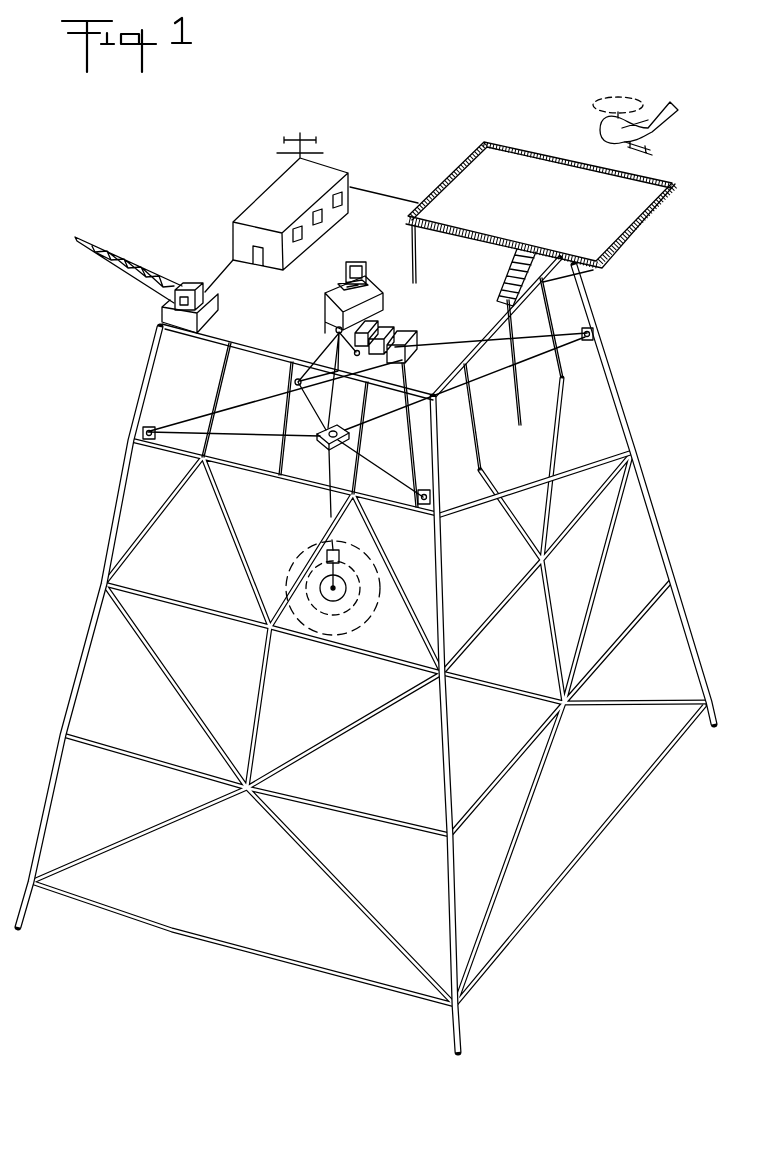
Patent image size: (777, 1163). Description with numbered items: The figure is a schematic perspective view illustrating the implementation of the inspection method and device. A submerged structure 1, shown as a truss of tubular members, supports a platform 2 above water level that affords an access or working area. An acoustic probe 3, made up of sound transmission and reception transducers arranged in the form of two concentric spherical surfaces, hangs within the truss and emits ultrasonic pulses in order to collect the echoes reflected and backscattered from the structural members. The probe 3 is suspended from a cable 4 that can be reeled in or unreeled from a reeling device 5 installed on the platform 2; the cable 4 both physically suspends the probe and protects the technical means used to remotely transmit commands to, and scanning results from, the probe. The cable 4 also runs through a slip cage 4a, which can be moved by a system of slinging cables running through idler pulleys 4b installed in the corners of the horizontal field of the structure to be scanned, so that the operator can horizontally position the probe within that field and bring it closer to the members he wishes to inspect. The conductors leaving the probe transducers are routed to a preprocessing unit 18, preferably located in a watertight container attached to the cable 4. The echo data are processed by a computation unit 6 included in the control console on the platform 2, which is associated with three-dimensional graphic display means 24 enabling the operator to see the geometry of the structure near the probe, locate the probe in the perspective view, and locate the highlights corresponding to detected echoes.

The submerged structure 1 is at (92, 542).
The platform 2 is at (418, 271).
The acoustic probe 3 is at (345, 600).
The cable 4 is at (327, 512).
The slip cage 4a is at (324, 445).
The idler pulleys 4b is at (144, 428).
The reeling device 5 is at (320, 351).
The computation unit 6 is at (325, 291).
The preprocessing unit 18 is at (342, 558).
The three-dimensional graphic display means 24 is at (348, 258).